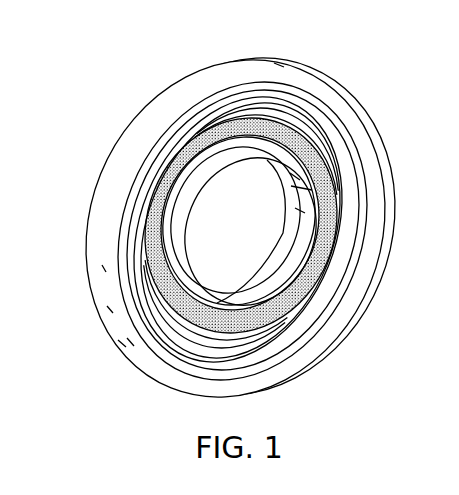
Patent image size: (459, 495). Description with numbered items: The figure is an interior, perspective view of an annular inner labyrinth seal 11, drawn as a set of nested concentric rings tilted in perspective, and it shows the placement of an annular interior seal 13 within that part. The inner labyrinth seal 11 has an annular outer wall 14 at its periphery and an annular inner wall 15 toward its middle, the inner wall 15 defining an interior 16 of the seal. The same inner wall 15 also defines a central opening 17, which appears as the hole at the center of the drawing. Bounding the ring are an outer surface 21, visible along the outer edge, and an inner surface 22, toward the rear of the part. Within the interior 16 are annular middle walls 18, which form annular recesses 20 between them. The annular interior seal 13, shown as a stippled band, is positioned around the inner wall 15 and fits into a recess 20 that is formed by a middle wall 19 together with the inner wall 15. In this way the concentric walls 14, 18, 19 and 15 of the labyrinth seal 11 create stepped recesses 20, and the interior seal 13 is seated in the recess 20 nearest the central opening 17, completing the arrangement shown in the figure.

The inner labyrinth seal 11 is at (342, 62).
The interior seal 13 is at (308, 283).
The outer wall 14 is at (247, 83).
The inner wall 15 is at (312, 197).
The interior 16 is at (365, 177).
The central opening 17 is at (250, 238).
The middle walls 18 is at (312, 117).
The middle wall 19 is at (190, 333).
The recess 20 is at (290, 117).
The outer surface 21 is at (167, 108).
The inner surface 22 is at (245, 348).